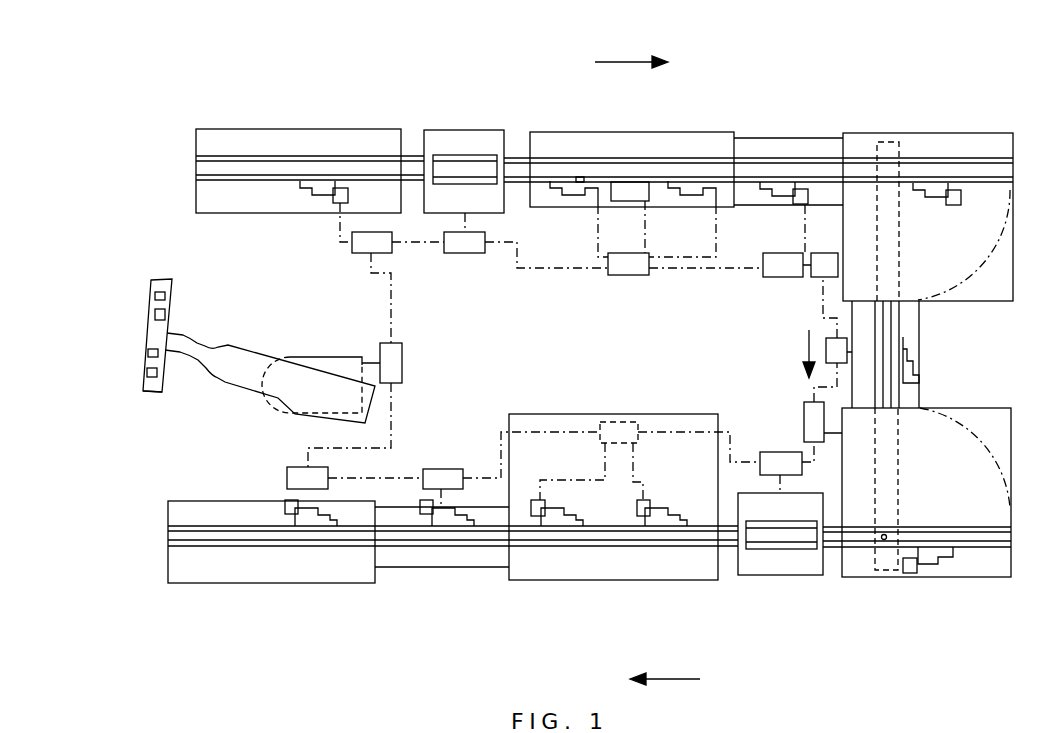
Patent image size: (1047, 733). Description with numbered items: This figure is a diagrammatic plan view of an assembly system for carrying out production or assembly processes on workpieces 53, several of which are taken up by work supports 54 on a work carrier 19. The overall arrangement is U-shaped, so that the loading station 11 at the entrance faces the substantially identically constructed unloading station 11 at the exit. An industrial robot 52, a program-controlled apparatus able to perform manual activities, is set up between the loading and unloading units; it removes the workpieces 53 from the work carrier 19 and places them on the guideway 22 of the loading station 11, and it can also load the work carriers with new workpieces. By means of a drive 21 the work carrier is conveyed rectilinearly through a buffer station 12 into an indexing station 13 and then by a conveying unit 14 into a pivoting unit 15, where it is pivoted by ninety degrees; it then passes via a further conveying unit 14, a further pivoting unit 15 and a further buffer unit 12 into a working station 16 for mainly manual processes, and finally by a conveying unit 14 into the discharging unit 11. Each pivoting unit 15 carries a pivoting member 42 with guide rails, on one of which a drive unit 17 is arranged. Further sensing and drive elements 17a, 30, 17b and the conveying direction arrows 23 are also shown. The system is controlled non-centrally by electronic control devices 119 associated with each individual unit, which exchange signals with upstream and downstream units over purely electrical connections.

The loading station 11 is at (290, 140).
The guideway 22 is at (370, 160).
The buffer station 12 is at (470, 130).
The drive 21 is at (582, 178).
The indexing station 13 is at (655, 140).
The conveying unit 14 is at (780, 145).
The pivoting member 42 is at (912, 160).
The pivoting unit 15 is at (958, 148).
The working station 16 is at (553, 575).
The drive unit 17 is at (320, 203).
The sensor 17a is at (575, 205).
The sensor 30 is at (632, 205).
The sensor 17b is at (693, 205).
The control device 119 is at (630, 276).
The conveying direction 23 is at (622, 61).
The work carrier 19 is at (172, 385).
The industrial robot 52 is at (310, 380).
The workpiece 53 is at (152, 393).
The work support 54 is at (148, 375).